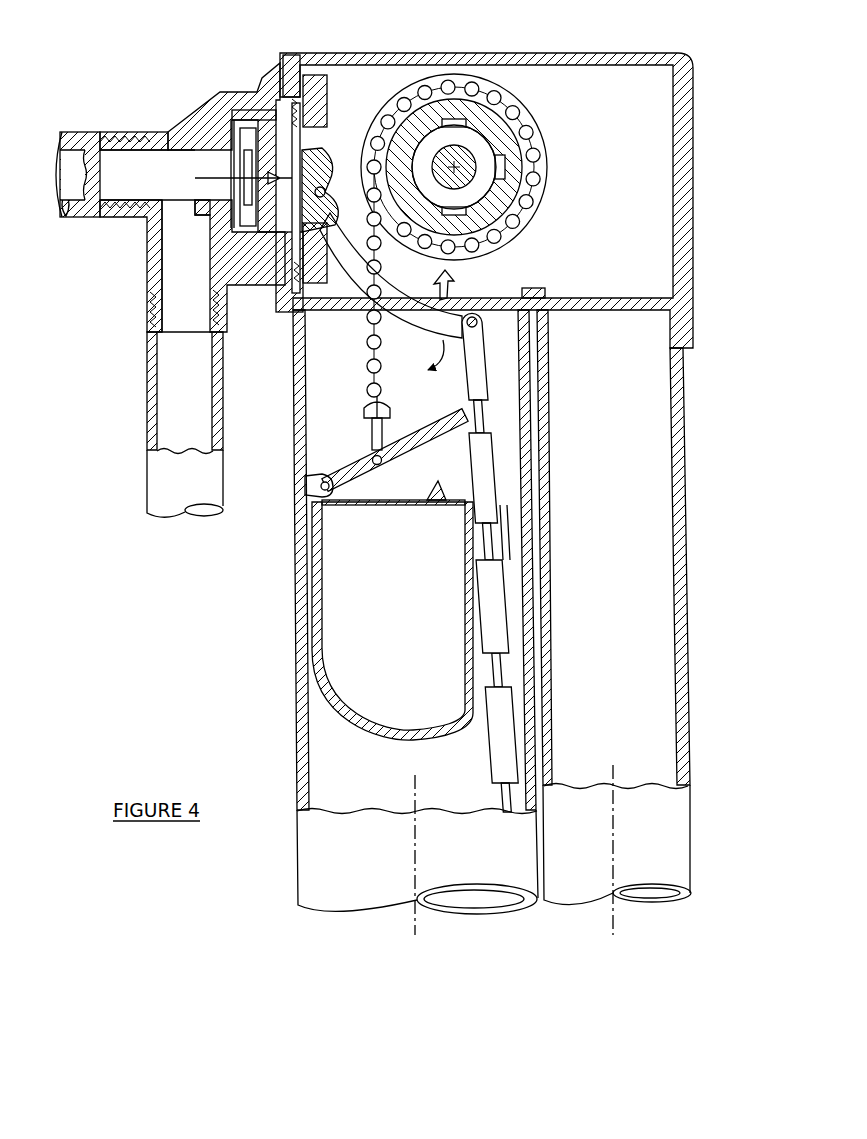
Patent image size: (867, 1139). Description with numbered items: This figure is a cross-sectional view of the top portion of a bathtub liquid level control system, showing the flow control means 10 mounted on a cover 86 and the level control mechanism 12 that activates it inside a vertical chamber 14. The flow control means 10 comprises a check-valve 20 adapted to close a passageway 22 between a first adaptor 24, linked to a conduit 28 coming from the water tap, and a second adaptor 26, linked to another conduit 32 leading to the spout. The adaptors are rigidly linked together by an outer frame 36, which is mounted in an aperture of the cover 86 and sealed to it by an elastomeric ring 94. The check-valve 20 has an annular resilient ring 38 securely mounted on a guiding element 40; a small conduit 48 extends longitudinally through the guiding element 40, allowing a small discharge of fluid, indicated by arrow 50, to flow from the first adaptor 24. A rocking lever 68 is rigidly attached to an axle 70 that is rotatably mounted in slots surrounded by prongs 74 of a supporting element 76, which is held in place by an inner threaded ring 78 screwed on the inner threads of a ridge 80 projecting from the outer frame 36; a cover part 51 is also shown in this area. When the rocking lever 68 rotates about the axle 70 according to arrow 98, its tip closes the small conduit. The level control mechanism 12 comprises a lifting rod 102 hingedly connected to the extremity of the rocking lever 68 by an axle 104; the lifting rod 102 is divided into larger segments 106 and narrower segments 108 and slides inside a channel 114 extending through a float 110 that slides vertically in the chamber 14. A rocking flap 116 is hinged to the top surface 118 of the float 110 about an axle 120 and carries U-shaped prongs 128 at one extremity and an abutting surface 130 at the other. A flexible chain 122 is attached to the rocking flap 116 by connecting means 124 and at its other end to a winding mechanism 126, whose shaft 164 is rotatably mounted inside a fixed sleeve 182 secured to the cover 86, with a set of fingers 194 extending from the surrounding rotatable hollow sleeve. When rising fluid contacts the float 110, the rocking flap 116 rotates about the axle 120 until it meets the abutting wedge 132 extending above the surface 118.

The flow control means 10 is at (164, 118).
The level control mechanism 12 is at (506, 280).
The vertical chamber 14 is at (382, 902).
The check-valve 20 is at (186, 172).
The passageway 22 is at (227, 209).
The first adaptor 24 is at (122, 218).
The second adaptor 26 is at (148, 322).
The conduit 28 is at (95, 132).
The conduit 32 is at (152, 400).
The outer frame 36 is at (187, 120).
The annular resilient ring 38 is at (231, 136).
The guiding element 40 is at (196, 163).
The small conduit 48 is at (198, 180).
The arrow 50 is at (212, 226).
The cover 51 is at (236, 92).
The rocking lever 68 is at (390, 290).
The axle 70 is at (326, 190).
The prongs 74 is at (318, 158).
The supporting element 76 is at (301, 138).
The inner threaded ring 78 is at (327, 110).
The ridge 80 is at (327, 100).
The cover 86 is at (517, 54).
The elastomeric ring 94 is at (282, 62).
The arrow 98 is at (446, 360).
The lifting rod 102 is at (494, 480).
The axle 104 is at (484, 322).
The larger segments 106 is at (497, 605).
The narrower segments 108 is at (497, 542).
The float 110 is at (350, 728).
The channel 114 is at (483, 708).
The rocking flap 116 is at (408, 440).
The top surface 118 is at (383, 497).
The axle 120 is at (318, 483).
The flexible chain 122 is at (367, 367).
The connecting means 124 is at (372, 436).
The winding mechanism 126 is at (545, 118).
The U-shaped prongs 128 is at (484, 405).
The abutting surface 130 is at (320, 504).
The abutting wedge 132 is at (428, 484).
The shaft 164 is at (526, 206).
The fixed sleeve 182 is at (490, 152).
The fingers 194 is at (500, 93).